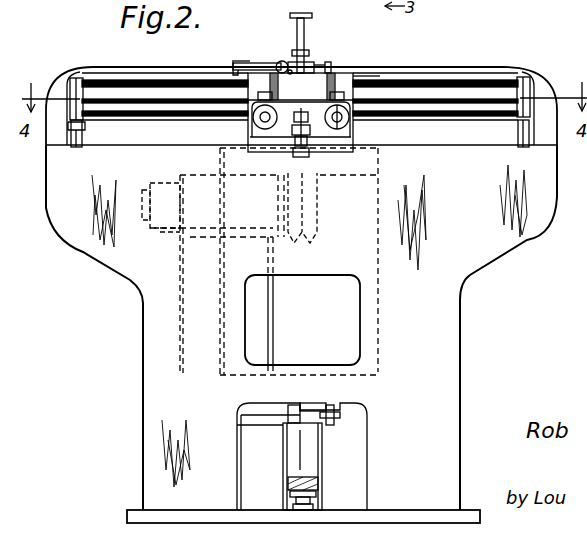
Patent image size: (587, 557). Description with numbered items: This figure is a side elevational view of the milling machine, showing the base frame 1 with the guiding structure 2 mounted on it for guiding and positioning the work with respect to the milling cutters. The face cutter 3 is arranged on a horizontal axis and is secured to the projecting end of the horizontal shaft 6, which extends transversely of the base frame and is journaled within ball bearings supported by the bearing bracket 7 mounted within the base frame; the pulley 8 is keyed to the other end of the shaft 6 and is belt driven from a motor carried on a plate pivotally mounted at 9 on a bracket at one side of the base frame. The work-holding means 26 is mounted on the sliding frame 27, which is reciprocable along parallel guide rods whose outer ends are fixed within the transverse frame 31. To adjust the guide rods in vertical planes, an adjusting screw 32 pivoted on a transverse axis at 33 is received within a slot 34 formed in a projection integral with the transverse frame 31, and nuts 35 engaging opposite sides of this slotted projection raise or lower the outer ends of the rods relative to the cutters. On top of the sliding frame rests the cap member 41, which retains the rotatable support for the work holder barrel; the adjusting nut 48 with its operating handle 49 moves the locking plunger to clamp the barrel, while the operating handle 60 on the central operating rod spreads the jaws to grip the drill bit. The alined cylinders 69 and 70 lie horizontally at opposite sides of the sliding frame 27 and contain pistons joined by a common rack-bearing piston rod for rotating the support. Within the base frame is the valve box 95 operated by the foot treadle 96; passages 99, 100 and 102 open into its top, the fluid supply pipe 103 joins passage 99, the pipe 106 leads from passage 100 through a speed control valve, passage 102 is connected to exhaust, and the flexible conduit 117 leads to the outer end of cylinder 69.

The machine frame / bed 1 is at (461, 336).
The guiding structure 2 is at (258, 118).
The face cutter 3 is at (322, 212).
The horizontal shaft 6 is at (170, 232).
The bearing bracket 7 is at (200, 175).
The pulley 8 is at (150, 226).
The pivot 9 is at (237, 62).
The work-holding means 26 is at (329, 62).
The sliding frame 27 is at (360, 72).
The transverse frame 31 is at (349, 117).
The adjusting screw 32 is at (378, 156).
The pivot of adjusting screw 33 is at (310, 158).
The slot 34 is at (297, 138).
The nuts 35 is at (289, 144).
The cap member 41 is at (313, 63).
The adjusting nut 48 is at (262, 56).
The operating handle 49 is at (238, 60).
The operating handle 60 is at (296, 35).
The cylinder 69 is at (172, 88).
The cylinder 70 is at (466, 84).
The valve box 95 is at (315, 466).
The foot treadle 96 is at (288, 484).
The passage 99 is at (286, 427).
The passage 100 is at (312, 430).
The passage 102 is at (323, 420).
The fluid supply pipe 103 is at (246, 414).
The pipe 106 is at (360, 406).
The flexible conduit 117 is at (87, 140).